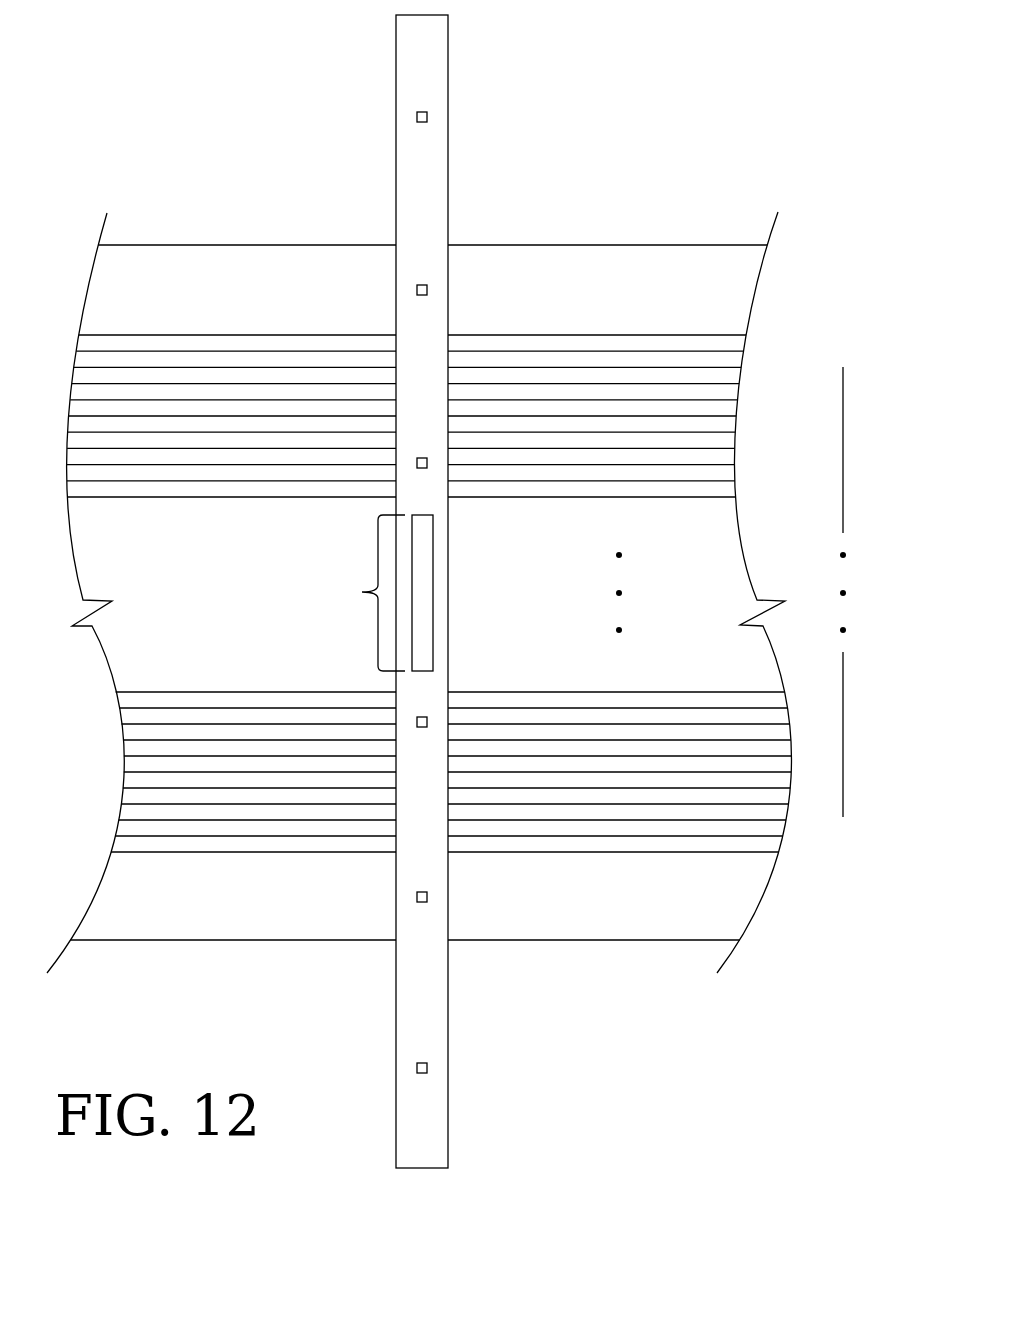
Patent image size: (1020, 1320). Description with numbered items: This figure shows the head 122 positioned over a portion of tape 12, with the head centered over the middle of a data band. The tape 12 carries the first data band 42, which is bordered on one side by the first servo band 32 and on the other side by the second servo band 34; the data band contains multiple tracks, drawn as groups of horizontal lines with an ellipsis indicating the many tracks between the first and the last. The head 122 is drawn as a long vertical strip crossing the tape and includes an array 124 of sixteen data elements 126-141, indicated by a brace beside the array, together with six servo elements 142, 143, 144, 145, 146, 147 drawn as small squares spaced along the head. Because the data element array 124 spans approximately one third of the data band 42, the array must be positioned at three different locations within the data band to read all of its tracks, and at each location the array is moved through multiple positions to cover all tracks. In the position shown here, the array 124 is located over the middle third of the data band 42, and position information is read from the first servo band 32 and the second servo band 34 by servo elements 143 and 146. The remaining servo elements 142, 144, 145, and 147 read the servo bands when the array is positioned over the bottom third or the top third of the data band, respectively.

The tape 12 is at (409, 592).
The servo band 1 32 is at (93, 300).
The data band 1 42 is at (92, 553).
The servo band 2 34 is at (105, 897).
The head 122 is at (435, 42).
The array of data elements 124 is at (452, 587).
The data elements 126-141 is at (338, 593).
The servo element 142 is at (428, 117).
The servo element 143 is at (428, 290).
The servo element 144 is at (428, 463).
The servo element 145 is at (428, 722).
The servo element 146 is at (428, 897).
The servo element 147 is at (428, 1068).